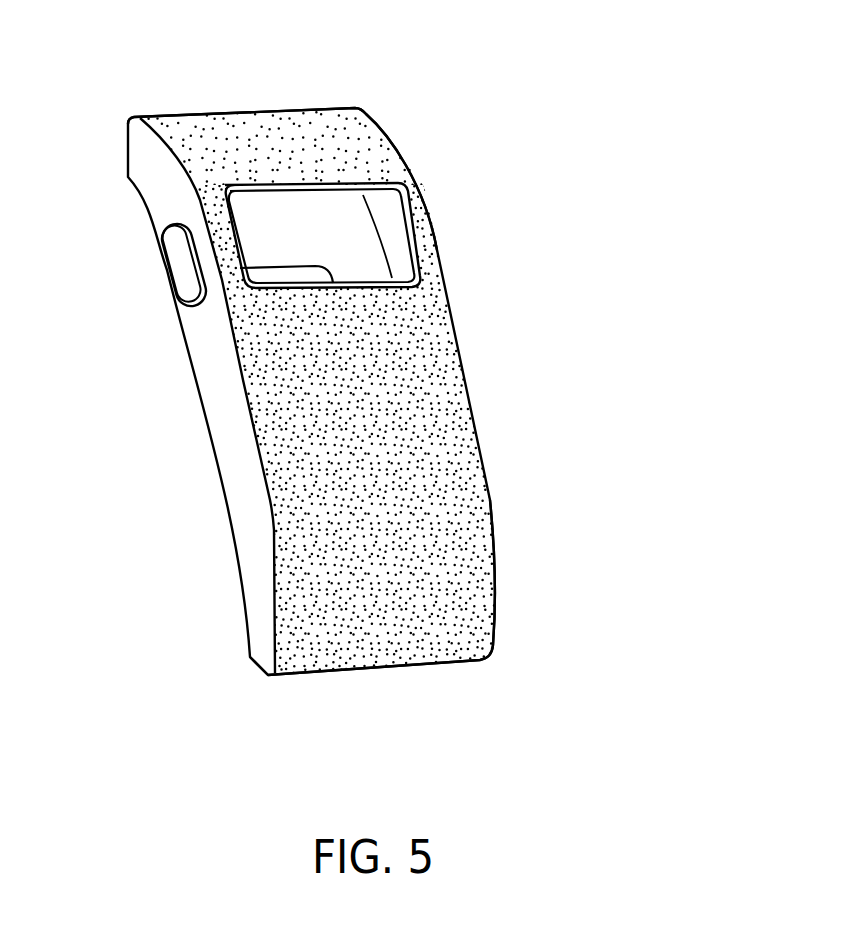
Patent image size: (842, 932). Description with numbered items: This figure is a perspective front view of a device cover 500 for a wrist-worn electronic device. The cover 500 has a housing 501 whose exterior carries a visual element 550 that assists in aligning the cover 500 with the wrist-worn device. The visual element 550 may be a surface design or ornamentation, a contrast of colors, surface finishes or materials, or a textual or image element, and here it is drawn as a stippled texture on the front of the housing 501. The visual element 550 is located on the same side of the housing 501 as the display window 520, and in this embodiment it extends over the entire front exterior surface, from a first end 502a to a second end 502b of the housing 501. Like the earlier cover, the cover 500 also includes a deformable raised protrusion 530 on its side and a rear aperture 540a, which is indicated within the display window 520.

The device cover 500 is at (490, 80).
The housing 501 is at (314, 158).
The first end 502a is at (372, 113).
The second end 502b is at (493, 652).
The display window 520 is at (407, 218).
The deformable raised protrusion 530 is at (176, 258).
The rear aperture 540a is at (337, 275).
The visual element 550 is at (433, 470).